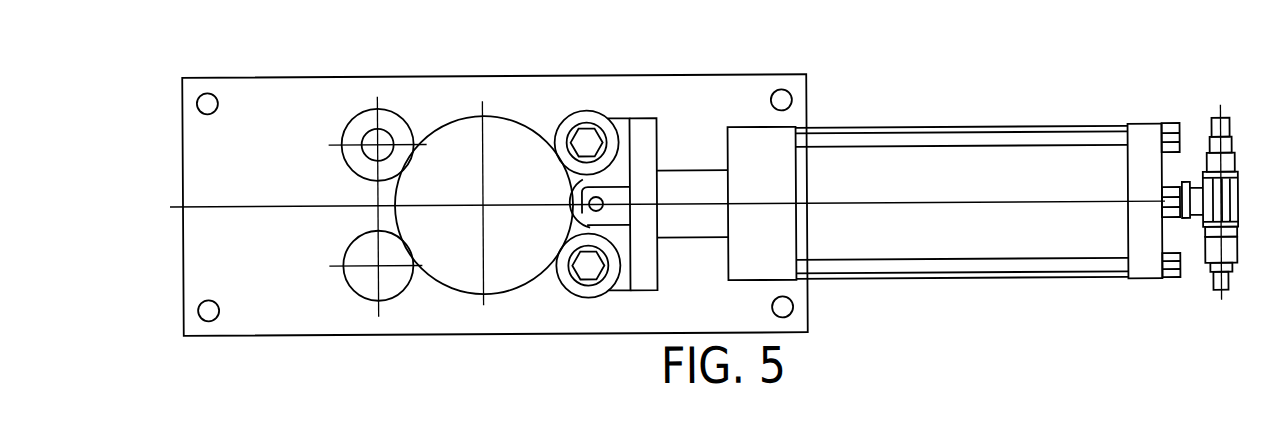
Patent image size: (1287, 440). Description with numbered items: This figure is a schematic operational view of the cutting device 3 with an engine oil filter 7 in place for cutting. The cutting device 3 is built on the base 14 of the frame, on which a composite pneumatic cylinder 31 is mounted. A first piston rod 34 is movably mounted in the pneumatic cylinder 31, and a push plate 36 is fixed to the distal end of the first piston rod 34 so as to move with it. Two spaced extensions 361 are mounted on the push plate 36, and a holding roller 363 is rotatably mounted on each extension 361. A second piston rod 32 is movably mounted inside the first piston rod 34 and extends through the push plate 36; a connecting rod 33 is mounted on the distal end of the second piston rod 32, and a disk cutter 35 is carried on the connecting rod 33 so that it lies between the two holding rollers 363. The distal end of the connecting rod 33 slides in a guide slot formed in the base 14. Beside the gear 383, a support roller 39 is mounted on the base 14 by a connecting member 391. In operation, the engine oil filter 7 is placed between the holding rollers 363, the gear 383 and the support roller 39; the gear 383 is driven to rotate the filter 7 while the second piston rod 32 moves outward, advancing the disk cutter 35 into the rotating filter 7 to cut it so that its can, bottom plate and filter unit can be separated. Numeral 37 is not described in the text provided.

The base 14 is at (298, 100).
The support roller 39 is at (363, 118).
The connecting member 391 is at (383, 137).
The gear 383 is at (360, 280).
The engine oil filter 7 is at (463, 262).
The cutting device 3 is at (1005, 151).
The composite pneumatic cylinder 31 is at (968, 164).
The second piston rod 32 is at (618, 194).
The connecting rod 33 is at (598, 192).
The first piston rod 34 is at (692, 227).
The disk cutter 35 is at (600, 230).
The push plate 36 is at (648, 144).
The extension 361 is at (592, 119).
The holding roller 363 is at (567, 124).
The speed control valve 37 is at (1223, 212).